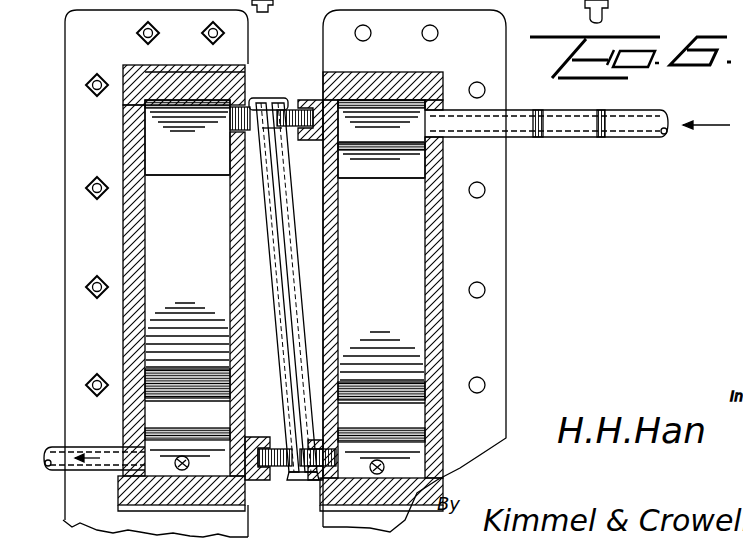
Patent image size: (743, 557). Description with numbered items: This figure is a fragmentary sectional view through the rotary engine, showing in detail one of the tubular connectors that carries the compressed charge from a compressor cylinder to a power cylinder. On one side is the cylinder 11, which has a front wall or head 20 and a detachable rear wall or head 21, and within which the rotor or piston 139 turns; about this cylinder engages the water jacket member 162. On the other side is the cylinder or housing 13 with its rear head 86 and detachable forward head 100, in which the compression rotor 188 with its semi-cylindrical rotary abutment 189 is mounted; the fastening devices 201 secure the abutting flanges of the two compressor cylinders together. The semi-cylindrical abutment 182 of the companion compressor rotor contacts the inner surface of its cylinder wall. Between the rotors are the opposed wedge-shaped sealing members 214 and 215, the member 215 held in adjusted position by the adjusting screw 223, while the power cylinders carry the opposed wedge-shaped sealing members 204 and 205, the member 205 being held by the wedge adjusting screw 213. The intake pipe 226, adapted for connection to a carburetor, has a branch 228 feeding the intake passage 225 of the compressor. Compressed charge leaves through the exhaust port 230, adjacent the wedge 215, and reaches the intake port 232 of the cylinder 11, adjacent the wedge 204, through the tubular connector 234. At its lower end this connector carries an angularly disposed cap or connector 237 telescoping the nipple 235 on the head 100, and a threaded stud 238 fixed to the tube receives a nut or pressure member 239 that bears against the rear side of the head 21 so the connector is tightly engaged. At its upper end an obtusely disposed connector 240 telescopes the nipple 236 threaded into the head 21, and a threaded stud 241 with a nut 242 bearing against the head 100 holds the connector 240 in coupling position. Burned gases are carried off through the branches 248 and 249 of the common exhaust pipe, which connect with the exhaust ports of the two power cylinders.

The cylinder 11 is at (157, 70).
The cylinder or housing 13 is at (447, 287).
The front wall or head 20 is at (155, 312).
The rear wall or head 21 is at (247, 320).
The rear head 86 is at (427, 258).
The detachable forward head 100 is at (338, 235).
The rotor or piston 139 is at (158, 220).
The water jacket member 162 is at (134, 56).
The semi-cylindrical abutment 182 is at (160, 316).
The compression rotor 188 is at (418, 232).
The rotary abutment 189 is at (413, 217).
The fastening devices 201 is at (412, 44).
The wedge-shaped sealing member 204 is at (198, 165).
The wedge-shaped sealing member 205 is at (160, 413).
The wedge adjusting screw 213 is at (182, 470).
The wedge-shaped sealing member 214 is at (368, 170).
The wedge-shaped sealing member 215 is at (410, 415).
The adjusting screw 223 is at (377, 474).
The intake passage 225 is at (413, 115).
The intake pipe 226 is at (623, 138).
The branch 228 is at (522, 138).
The exhaust port 230 is at (417, 457).
The intake port 232 is at (143, 128).
The tubular connector 234 is at (292, 236).
The nipple 235 is at (290, 476).
The nipple 236 is at (258, 100).
The angularly disposed cap or connector 237 is at (307, 490).
The threaded stud 238 is at (270, 472).
The nut or pressure member 239 is at (250, 438).
The obtusely disposed connector 240 is at (271, 104).
The threaded stud 241 is at (284, 170).
The nut 242 is at (310, 142).
The branch 248 is at (48, 446).
The branch 249 is at (96, 472).